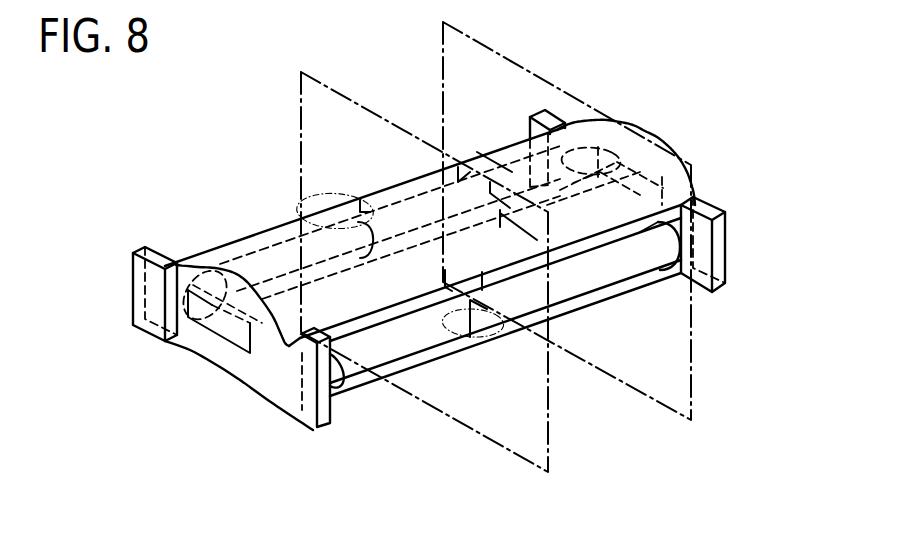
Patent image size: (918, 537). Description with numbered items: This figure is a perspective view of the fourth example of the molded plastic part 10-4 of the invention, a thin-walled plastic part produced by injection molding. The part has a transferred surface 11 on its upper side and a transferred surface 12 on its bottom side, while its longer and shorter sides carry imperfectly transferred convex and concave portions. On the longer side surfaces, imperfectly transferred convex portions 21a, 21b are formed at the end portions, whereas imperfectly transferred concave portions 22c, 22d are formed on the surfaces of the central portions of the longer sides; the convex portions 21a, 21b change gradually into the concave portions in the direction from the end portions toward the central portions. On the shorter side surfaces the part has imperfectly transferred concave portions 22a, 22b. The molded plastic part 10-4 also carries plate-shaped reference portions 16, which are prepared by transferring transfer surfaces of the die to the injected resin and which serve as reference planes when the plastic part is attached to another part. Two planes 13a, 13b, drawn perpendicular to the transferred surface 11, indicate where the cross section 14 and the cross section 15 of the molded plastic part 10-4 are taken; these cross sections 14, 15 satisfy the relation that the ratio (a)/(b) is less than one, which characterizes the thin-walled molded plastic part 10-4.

The molded plastic part 10-4 is at (745, 74).
The transferred surface 11 is at (233, 255).
The transferred surface 12 is at (240, 380).
The plane 13a is at (548, 420).
The plane 13b is at (692, 372).
The cross section 14 is at (452, 318).
The cross section 15 is at (612, 292).
The plate-shaped reference portion 16 is at (133, 272).
The imperfectly transferred convex portion 21a is at (668, 283).
The imperfectly transferred convex portion 21b is at (440, 192).
The imperfectly transferred concave portion 22a is at (250, 292).
The imperfectly transferred concave portion 22b is at (642, 150).
The imperfectly transferred concave portion 22c is at (500, 345).
The imperfectly transferred concave portion 22d is at (297, 202).